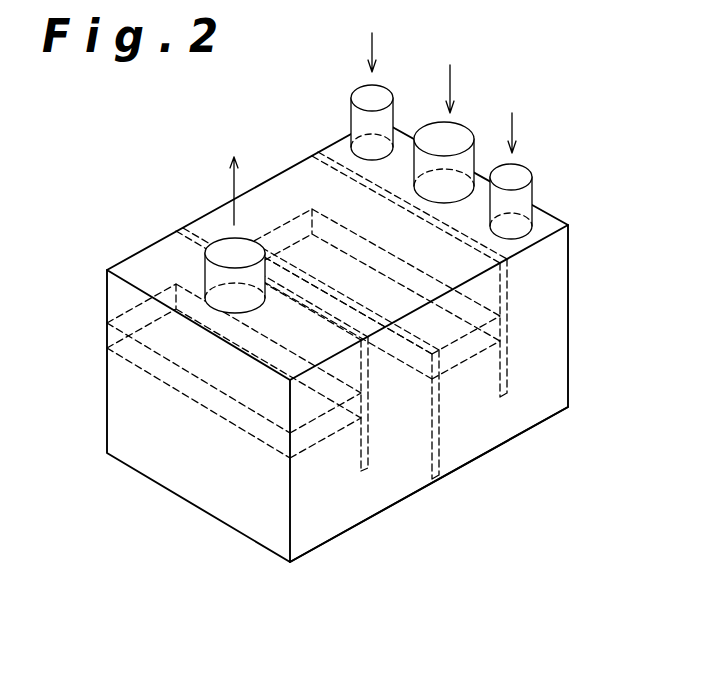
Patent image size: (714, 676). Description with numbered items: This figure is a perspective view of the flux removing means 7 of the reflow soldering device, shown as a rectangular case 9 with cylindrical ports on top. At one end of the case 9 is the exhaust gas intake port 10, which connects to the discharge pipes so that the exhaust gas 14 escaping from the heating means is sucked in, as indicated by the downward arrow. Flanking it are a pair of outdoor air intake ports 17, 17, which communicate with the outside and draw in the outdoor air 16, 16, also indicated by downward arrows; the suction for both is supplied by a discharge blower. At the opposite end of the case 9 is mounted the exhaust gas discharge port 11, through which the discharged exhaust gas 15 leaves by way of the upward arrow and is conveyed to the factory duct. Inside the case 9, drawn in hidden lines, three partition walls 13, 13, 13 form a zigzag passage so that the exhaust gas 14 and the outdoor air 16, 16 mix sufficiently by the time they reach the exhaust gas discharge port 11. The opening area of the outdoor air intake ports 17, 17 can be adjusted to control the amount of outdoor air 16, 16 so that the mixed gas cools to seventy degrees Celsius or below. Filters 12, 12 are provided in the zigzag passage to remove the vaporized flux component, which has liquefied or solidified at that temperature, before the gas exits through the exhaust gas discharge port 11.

The flux removing means 7 is at (569, 313).
The case 9 is at (528, 430).
The exhaust gas intake port 10 is at (473, 136).
The exhaust gas discharge port 11 is at (217, 238).
The filters 12 is at (275, 440).
The partition walls 13 is at (488, 388).
The exhaust gas 14 is at (450, 80).
The discharged exhaust gas 15 is at (235, 186).
The outdoor air 16 is at (373, 45).
The outdoor air intake ports 17 is at (393, 110).